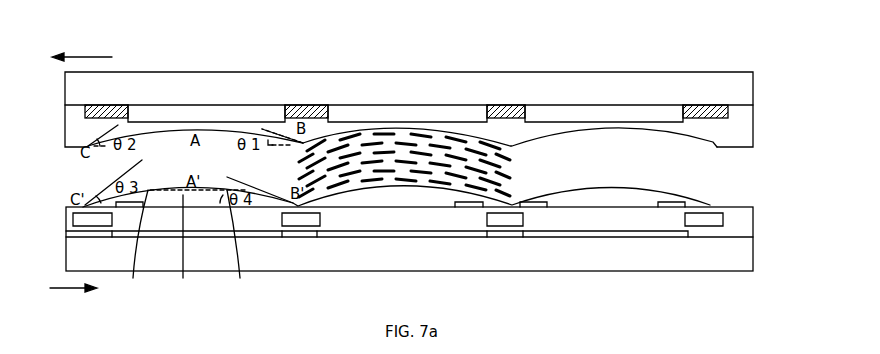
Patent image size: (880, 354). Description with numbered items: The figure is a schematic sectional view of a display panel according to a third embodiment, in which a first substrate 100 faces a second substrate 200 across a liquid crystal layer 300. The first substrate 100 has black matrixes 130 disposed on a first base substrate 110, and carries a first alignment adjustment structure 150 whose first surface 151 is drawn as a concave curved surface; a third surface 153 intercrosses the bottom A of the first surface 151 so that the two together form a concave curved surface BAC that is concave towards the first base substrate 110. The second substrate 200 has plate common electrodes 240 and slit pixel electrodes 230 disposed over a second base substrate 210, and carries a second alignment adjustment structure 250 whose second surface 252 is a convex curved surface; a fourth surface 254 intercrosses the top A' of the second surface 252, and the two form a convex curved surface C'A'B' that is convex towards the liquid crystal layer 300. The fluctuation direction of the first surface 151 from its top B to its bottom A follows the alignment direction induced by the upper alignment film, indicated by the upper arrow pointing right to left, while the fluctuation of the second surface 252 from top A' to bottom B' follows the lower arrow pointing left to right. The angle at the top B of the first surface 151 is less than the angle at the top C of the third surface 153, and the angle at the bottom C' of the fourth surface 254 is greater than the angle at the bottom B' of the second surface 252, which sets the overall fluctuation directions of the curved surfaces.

The first substrate 100 is at (753, 80).
The first base substrate 110 is at (660, 90).
The black matrixes 130 is at (713, 103).
The first alignment adjustment structure 150 is at (177, 127).
The first surface 151 is at (232, 130).
The third surface 153 is at (132, 133).
The second substrate 200 is at (695, 271).
The second base substrate 210 is at (722, 257).
The slit pixel electrodes 230 is at (687, 203).
The plate common electrodes 240 is at (590, 235).
The second alignment adjustment structure 250 is at (396, 243).
The second surface 252 is at (256, 242).
The fourth surface 254 is at (116, 231).
The liquid crystal layer 300 is at (512, 180).